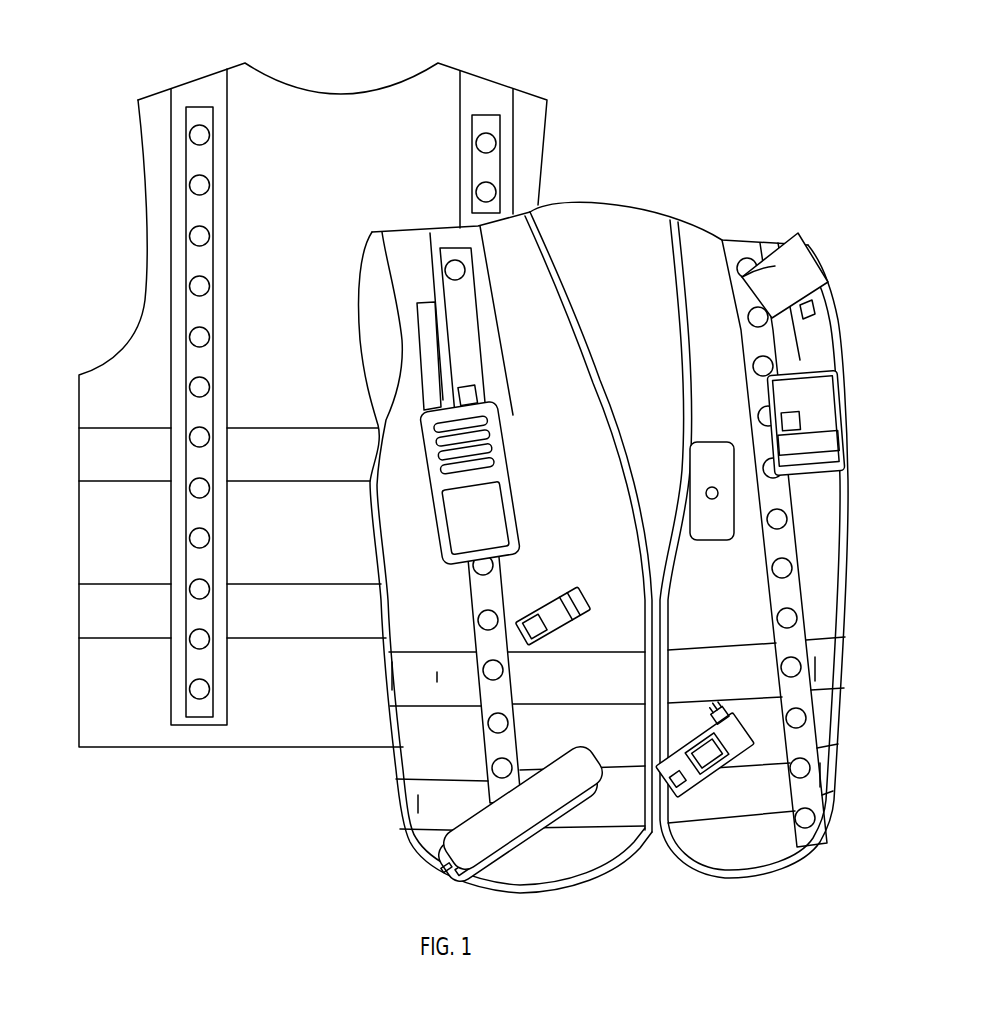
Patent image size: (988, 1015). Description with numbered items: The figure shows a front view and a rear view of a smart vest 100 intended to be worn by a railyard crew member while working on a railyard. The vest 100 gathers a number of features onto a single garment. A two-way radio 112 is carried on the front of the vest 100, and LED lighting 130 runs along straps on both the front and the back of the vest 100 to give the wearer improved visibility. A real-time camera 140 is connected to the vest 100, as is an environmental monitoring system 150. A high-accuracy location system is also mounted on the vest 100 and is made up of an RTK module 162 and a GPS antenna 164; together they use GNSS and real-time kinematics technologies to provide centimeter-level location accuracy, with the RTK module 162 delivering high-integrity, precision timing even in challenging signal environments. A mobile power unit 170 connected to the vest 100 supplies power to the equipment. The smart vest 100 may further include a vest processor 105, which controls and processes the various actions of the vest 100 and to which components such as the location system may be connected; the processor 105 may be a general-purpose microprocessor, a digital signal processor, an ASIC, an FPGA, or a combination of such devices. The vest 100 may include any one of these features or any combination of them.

The smart vest 100 is at (133, 67).
The vest processor 105 is at (716, 463).
The two-way radio 112 is at (470, 510).
The LED lighting 130 is at (490, 162).
The real-time camera 140 is at (717, 498).
The environmental monitoring system 150 is at (560, 612).
The RTK module 162 is at (705, 755).
The GPS antenna 164 is at (805, 268).
The mobile power unit 170 is at (517, 810).